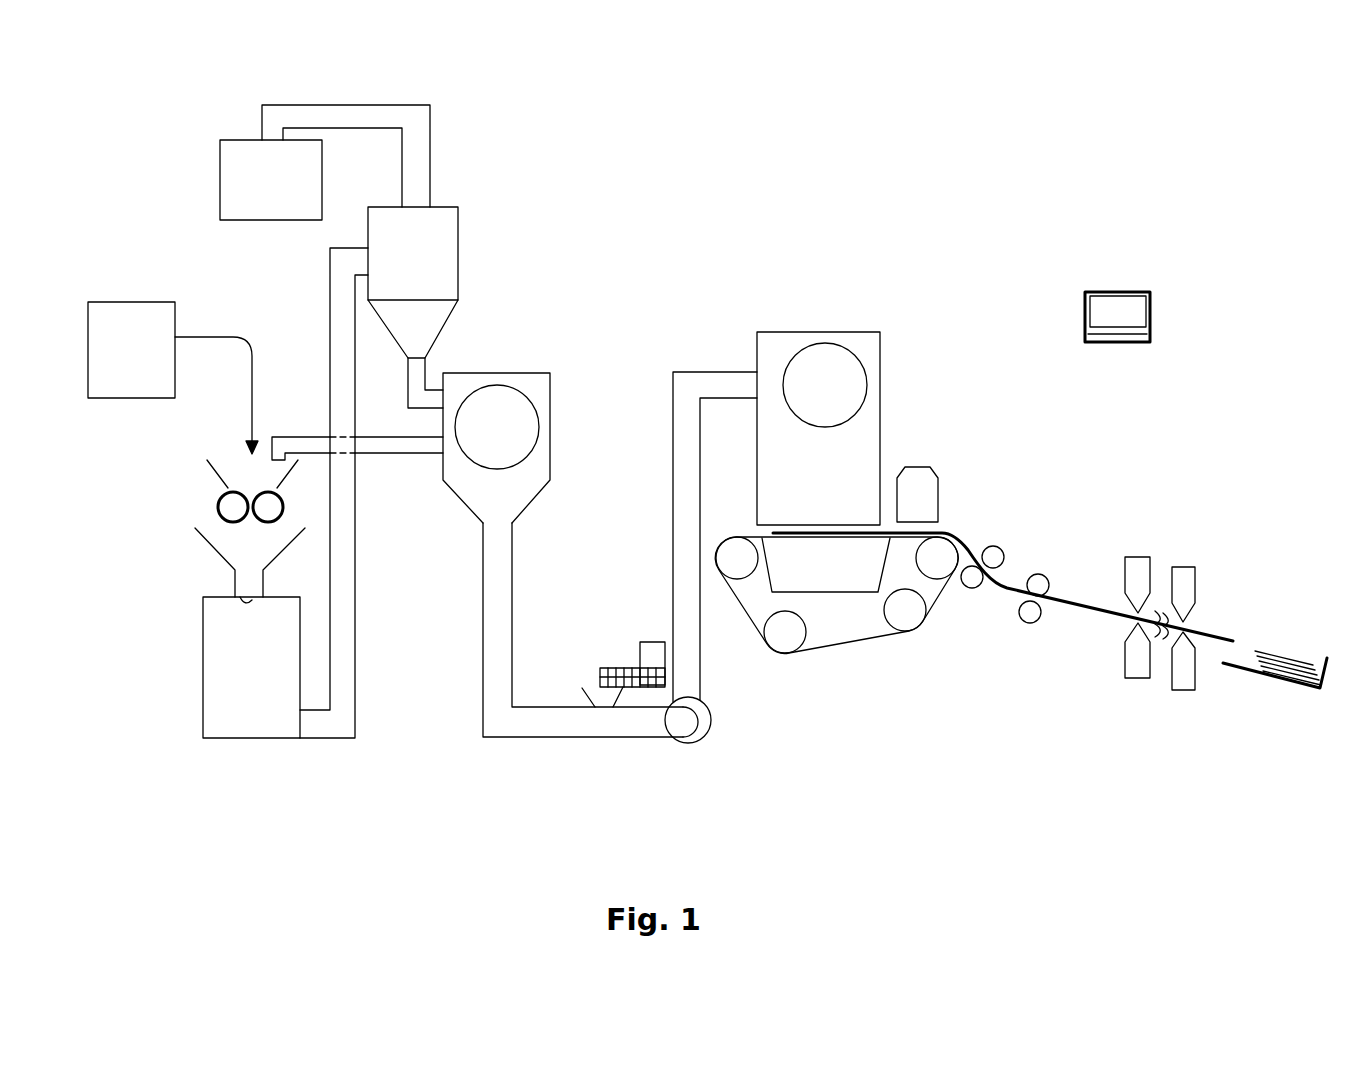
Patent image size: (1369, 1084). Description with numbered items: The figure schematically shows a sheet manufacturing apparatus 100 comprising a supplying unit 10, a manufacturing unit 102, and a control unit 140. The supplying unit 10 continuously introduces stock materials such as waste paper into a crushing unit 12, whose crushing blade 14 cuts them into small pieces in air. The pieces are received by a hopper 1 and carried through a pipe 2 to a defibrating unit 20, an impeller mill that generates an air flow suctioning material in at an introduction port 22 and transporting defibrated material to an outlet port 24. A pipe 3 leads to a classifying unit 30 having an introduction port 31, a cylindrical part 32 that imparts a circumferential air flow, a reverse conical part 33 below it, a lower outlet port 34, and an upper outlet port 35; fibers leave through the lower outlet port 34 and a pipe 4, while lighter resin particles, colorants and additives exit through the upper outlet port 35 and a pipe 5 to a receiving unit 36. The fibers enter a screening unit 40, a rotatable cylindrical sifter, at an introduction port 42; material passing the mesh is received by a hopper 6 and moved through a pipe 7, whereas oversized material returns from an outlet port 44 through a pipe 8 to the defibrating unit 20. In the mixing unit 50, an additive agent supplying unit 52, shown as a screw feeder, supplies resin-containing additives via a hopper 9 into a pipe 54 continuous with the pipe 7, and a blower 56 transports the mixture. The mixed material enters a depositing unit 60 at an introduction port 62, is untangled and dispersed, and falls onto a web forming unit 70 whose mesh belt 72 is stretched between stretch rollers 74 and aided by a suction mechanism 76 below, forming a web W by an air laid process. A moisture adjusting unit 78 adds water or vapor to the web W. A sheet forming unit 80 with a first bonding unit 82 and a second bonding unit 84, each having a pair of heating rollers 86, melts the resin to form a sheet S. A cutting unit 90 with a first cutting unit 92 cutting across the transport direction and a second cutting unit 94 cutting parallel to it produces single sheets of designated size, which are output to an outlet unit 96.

The hopper 1 is at (205, 547).
The pipe 2 is at (230, 584).
The pipe 3 is at (345, 613).
The pipe 4 is at (428, 401).
The pipe 5 is at (367, 116).
The hopper 6 is at (533, 503).
The pipe 7 is at (497, 596).
The pipe 8 is at (388, 457).
The hopper 9 is at (585, 697).
The supplying unit 10 is at (180, 296).
The crushing unit 12 is at (190, 471).
The crushing blade 14 is at (232, 507).
The defibrating unit 20 is at (197, 749).
The introduction port 22 is at (248, 600).
The outlet port 24 is at (296, 742).
The classifying unit 30 is at (468, 196).
The introduction port 31 is at (380, 242).
The cylindrical part 32 is at (448, 266).
The reverse conical part 33 is at (428, 310).
The lower outlet port 34 is at (413, 356).
The upper outlet port 35 is at (418, 213).
The receiving unit 36 is at (245, 178).
The screening unit 40 is at (560, 361).
The introduction port 42 is at (478, 400).
The outlet port 44 is at (466, 458).
The mixing unit 50 is at (722, 747).
The additive agent supplying unit 52 is at (652, 645).
The pipe 54 is at (685, 557).
The blower 56 is at (700, 731).
The depositing unit 60 is at (906, 331).
The introduction port 62 is at (786, 382).
The web forming unit 70 is at (900, 687).
The mesh belt 72 is at (755, 532).
The stretch rollers 74 is at (737, 562).
The suction mechanism 76 is at (818, 572).
The moisture adjusting unit 78 is at (915, 481).
The sheet forming unit 80 is at (1031, 495).
The first bonding unit 82 is at (1010, 538).
The second bonding unit 84 is at (1052, 566).
The heating rollers 86 is at (992, 550).
The cutting unit 90 is at (1153, 493).
The first cutting unit 92 is at (1138, 546).
The second cutting unit 94 is at (1182, 554).
The outlet unit 96 is at (1306, 691).
The sheet manufacturing apparatus 100 is at (1068, 210).
The manufacturing unit 102 is at (976, 282).
The control unit 140 is at (1135, 300).
The web W is at (962, 543).
The sheet S is at (1102, 605).